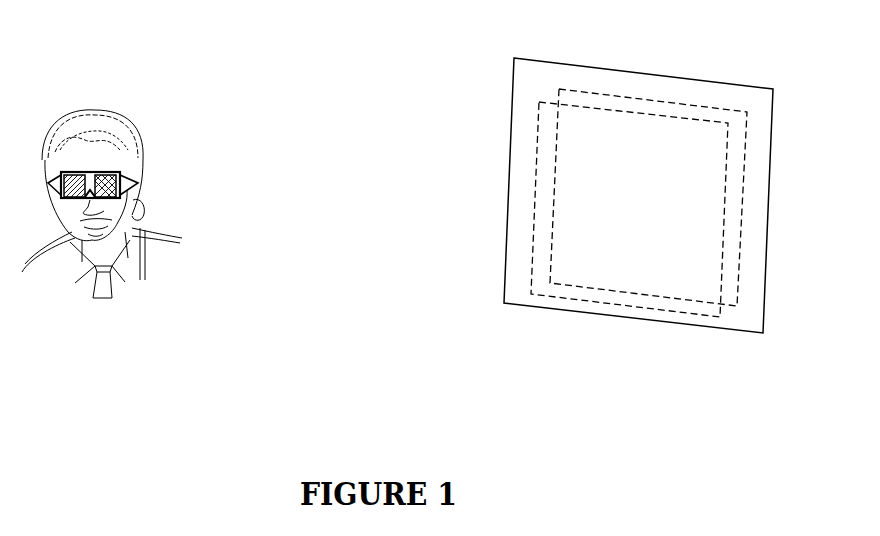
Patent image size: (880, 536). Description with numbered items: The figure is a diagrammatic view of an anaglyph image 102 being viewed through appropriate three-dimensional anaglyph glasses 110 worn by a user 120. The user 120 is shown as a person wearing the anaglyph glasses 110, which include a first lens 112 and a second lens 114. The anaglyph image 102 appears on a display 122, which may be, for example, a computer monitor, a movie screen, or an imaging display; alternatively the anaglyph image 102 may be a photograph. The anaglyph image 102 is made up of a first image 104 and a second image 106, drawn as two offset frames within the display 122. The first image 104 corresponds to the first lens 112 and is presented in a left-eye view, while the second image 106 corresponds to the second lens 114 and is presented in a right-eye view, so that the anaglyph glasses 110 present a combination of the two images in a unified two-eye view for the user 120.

The anaglyph image 102 is at (648, 115).
The first image 104 is at (540, 137).
The second image 106 is at (558, 94).
The 3D anaglyph glasses 110 is at (122, 173).
The first lens 112 is at (107, 172).
The second lens 114 is at (77, 172).
The user 120 is at (135, 257).
The display 122 is at (757, 320).